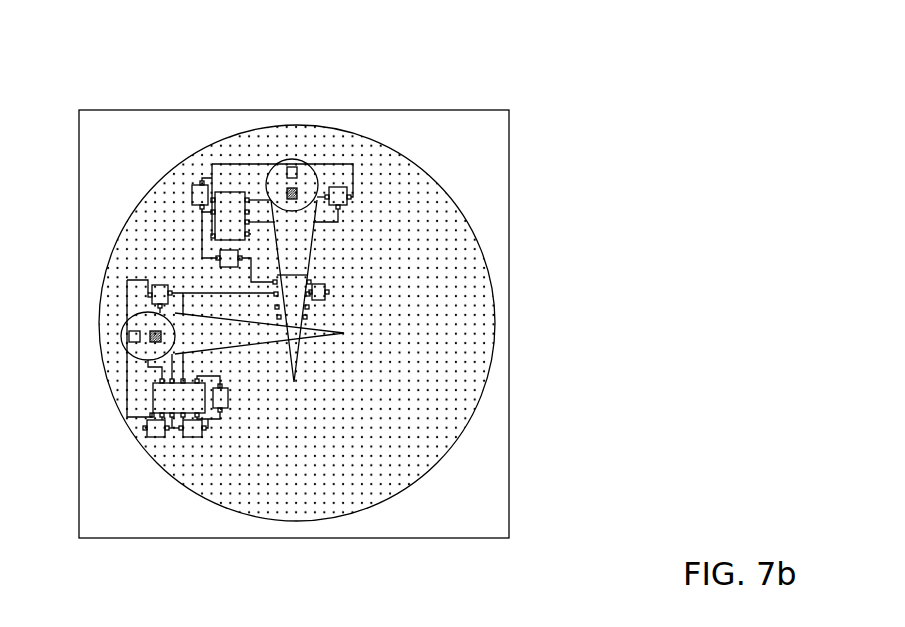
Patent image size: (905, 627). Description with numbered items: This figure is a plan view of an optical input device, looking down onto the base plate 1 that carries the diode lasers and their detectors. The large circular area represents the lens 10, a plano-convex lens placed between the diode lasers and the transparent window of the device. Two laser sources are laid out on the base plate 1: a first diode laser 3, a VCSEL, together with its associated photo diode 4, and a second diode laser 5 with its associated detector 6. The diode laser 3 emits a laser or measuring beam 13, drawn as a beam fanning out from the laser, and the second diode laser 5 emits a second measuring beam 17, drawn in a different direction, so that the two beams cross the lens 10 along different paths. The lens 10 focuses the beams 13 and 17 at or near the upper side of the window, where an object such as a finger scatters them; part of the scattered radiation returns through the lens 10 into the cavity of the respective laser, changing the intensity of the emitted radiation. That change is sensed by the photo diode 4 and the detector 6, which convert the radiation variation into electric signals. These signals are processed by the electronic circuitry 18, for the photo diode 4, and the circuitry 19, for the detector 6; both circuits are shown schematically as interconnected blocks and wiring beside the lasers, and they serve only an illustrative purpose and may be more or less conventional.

The base plate 1 is at (472, 166).
The diode laser 3 is at (290, 166).
The photo diode 4 is at (298, 197).
The second diode laser 5 is at (130, 337).
The detector 6 is at (148, 346).
The lens 10 is at (387, 183).
The laser beam 13 is at (297, 243).
The laser beam 17 is at (240, 337).
The electronic circuitry 18 is at (338, 187).
The circuitry 19 is at (127, 283).